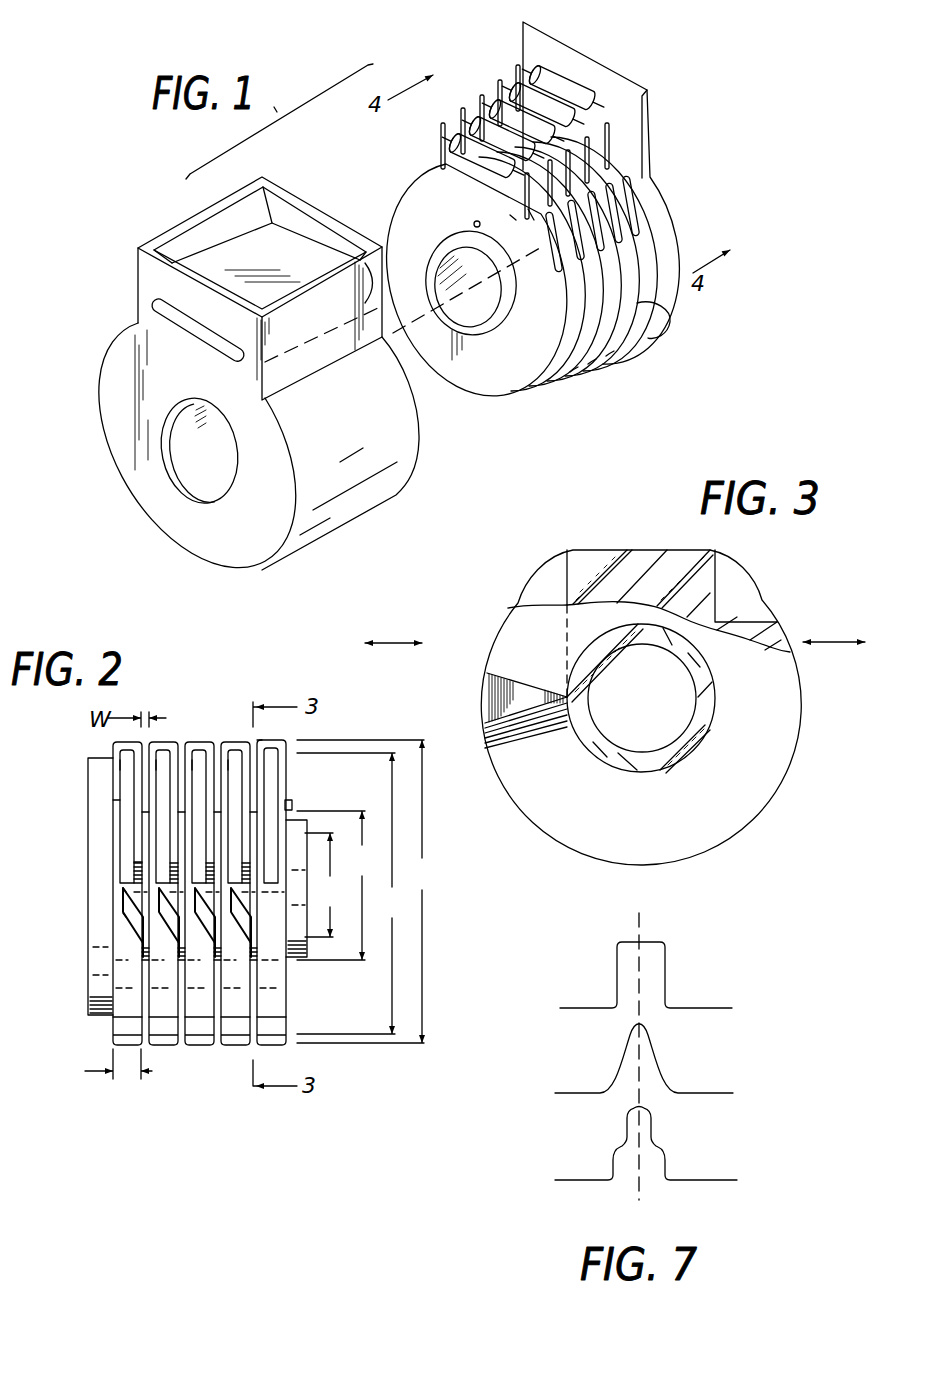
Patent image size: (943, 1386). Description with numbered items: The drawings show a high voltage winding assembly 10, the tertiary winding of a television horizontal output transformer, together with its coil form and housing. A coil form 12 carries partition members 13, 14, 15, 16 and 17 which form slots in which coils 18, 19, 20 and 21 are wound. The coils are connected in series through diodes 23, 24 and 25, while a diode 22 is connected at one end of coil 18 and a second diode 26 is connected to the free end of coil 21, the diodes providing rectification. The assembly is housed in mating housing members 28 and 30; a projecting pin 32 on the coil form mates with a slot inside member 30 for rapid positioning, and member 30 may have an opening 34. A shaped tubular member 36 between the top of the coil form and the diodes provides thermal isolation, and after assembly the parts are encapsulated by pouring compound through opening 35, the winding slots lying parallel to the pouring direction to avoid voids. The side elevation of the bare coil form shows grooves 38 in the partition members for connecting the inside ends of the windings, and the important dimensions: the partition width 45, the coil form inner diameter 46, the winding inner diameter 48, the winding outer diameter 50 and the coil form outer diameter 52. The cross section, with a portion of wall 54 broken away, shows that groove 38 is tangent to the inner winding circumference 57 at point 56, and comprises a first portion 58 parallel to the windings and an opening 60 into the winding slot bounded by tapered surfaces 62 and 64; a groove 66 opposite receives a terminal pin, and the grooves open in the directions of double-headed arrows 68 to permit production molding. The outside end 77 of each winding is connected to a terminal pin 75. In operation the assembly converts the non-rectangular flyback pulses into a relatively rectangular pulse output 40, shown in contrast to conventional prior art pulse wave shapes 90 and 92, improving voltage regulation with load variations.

In FIG. 1, the high voltage winding assembly 10 is at (655, 68).
In FIG. 1, the coil form 12 is at (477, 372).
In FIG. 2, the coil form 12 is at (296, 888).
In FIG. 1, the partition member 13 is at (543, 387).
In FIG. 2, the partition member 13 is at (275, 1047).
In FIG. 1, the partition member 14 is at (585, 363).
In FIG. 2, the partition member 14 is at (238, 1047).
In FIG. 1, the partition member 15 is at (607, 350).
In FIG. 2, the partition member 15 is at (203, 1047).
In FIG. 1, the partition member 16 is at (655, 218).
In FIG. 2, the partition member 16 is at (169, 1047).
In FIG. 1, the partition member 17 is at (670, 240).
In FIG. 2, the partition member 17 is at (115, 1040).
In FIG. 1, the coil 18 is at (573, 370).
In FIG. 1, the coil 19 is at (595, 358).
In FIG. 1, the coil 20 is at (610, 347).
In FIG. 1, the coil 21 is at (667, 330).
In FIG. 1, the diode 22 is at (440, 160).
In FIG. 1, the diode 23 is at (478, 123).
In FIG. 1, the diode 24 is at (490, 103).
In FIG. 1, the diode 25 is at (508, 87).
In FIG. 1, the diode 26 is at (567, 107).
In FIG. 1, the housing member 28 is at (660, 180).
In FIG. 2, the housing member 28 is at (100, 886).
In FIG. 1, the housing member 30 is at (160, 527).
In FIG. 1, the projecting pin 32 is at (473, 226).
In FIG. 2, the projecting pin 32 is at (292, 805).
In FIG. 1, the opening 34 is at (155, 304).
In FIG. 1, the opening 35 is at (175, 227).
In FIG. 1, the shaped tubular member 36 is at (287, 230).
In FIG. 2, the groove 38 is at (232, 750).
In FIG. 3, the groove 38 is at (523, 580).
In FIG. 7, the rectangular pulse output 40 is at (665, 960).
In FIG. 2, the width of partition members 45 is at (104, 1066).
In FIG. 2, the inner diameter of coil form 46 is at (324, 885).
In FIG. 2, the inner diameter of windings 48 is at (337, 885).
In FIG. 2, the outer diameter of windings 50 is at (352, 893).
In FIG. 2, the outer diameter of coil form 52 is at (370, 891).
In FIG. 2, the wall 54 is at (250, 744).
In FIG. 3, the wall 54 is at (500, 625).
In FIG. 3, the tangent point 56 is at (567, 690).
In FIG. 3, the inner winding circumference 57 is at (712, 722).
In FIG. 2, the first portion of groove 58 is at (121, 809).
In FIG. 3, the first portion of groove 58 is at (548, 575).
In FIG. 2, the opening 60 is at (126, 891).
In FIG. 3, the opening 60 is at (484, 695).
In FIG. 2, the tapered surface 62 is at (125, 913).
In FIG. 3, the tapered surface 62 is at (488, 733).
In FIG. 2, the tapered surface 64 is at (134, 869).
In FIG. 3, the tapered surface 64 is at (497, 670).
In FIG. 1, the groove 66 is at (549, 268).
In FIG. 3, the groove 66 is at (757, 583).
In FIG. 3, the double-headed arrows 68 is at (396, 642).
In FIG. 1, the terminal pin 75 is at (513, 218).
In FIG. 1, the outside end of winding 77 is at (530, 217).
In FIG. 7, the prior art pulse wave shape 90 is at (652, 1062).
In FIG. 7, the prior art pulse wave shape 92 is at (650, 1140).